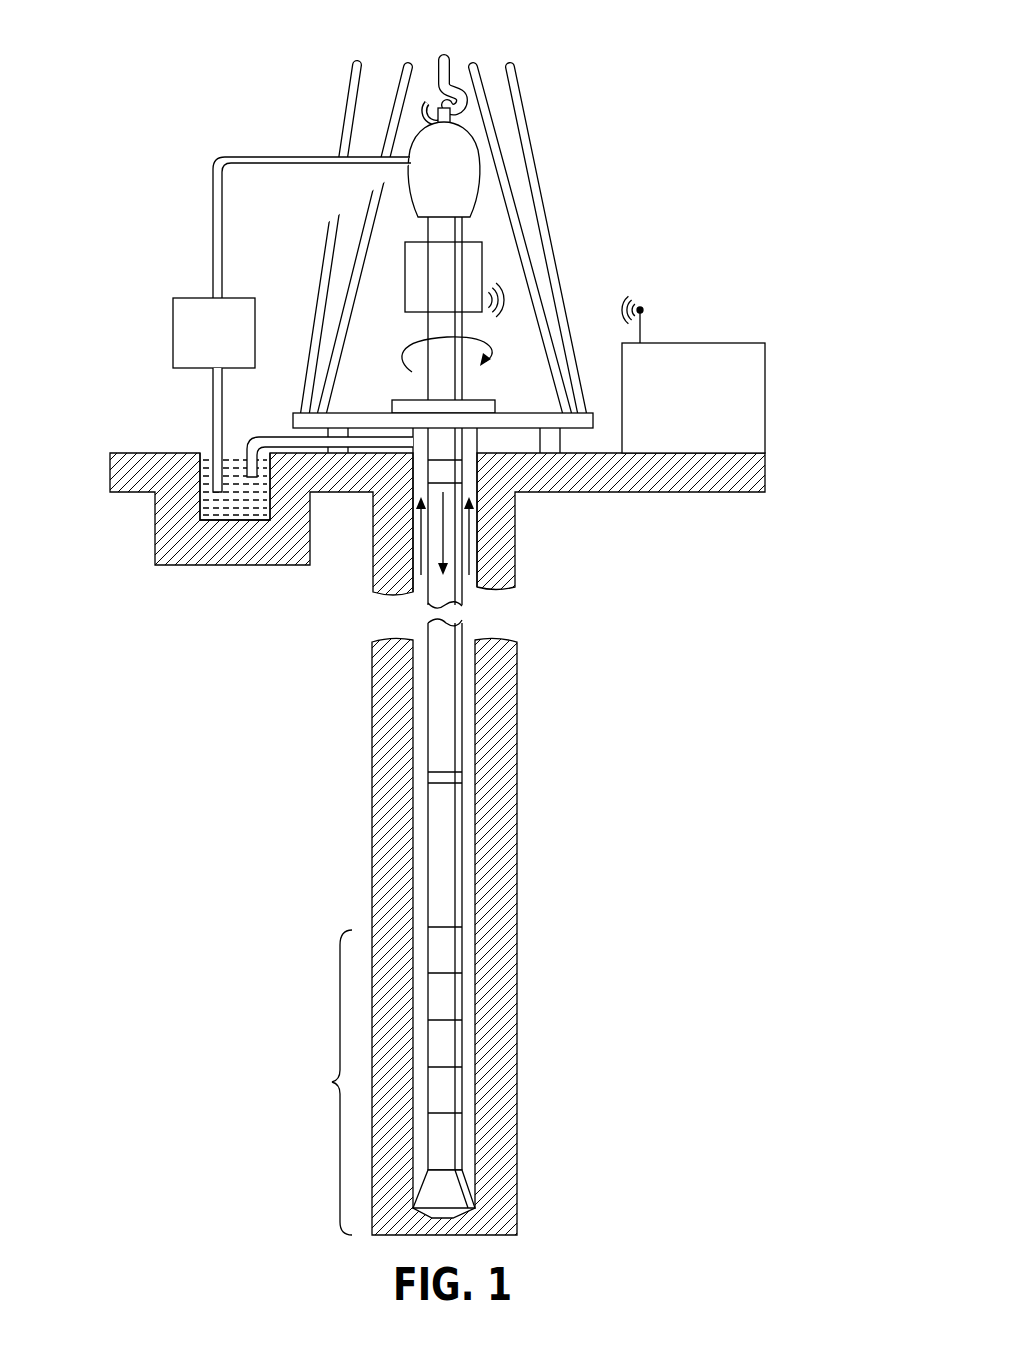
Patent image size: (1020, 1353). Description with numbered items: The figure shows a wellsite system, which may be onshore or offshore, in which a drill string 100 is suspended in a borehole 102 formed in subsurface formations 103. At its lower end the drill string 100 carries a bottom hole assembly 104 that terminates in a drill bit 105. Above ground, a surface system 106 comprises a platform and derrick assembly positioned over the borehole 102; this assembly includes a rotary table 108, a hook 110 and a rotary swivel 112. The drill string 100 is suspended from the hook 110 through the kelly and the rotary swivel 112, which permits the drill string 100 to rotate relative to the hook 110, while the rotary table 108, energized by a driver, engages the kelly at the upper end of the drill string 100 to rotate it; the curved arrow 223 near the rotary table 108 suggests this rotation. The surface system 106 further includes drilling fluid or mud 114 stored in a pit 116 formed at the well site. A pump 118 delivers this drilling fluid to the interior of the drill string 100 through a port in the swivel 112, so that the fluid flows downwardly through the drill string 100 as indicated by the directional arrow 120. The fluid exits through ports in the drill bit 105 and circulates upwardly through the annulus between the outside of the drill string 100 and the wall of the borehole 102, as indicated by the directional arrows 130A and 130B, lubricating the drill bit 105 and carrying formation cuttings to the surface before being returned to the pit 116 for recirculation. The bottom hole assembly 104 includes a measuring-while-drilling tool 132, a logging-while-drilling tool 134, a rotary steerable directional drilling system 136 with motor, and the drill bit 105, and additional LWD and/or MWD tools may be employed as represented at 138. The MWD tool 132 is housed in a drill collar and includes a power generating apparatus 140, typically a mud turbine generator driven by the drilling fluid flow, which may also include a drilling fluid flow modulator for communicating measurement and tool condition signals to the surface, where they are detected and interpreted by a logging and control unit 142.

The drill string 100 is at (428, 421).
The borehole 102 is at (469, 433).
The subsurface formations 103 is at (500, 697).
The bottom hole assembly 104 is at (322, 1082).
The drill bit 105 is at (447, 1187).
The surface system 106 is at (572, 148).
The rotary table 108 is at (470, 403).
The hook 110 is at (450, 68).
The rotary swivel 112 is at (424, 155).
The drilling fluid 114 is at (198, 442).
The pit 116 is at (233, 513).
The pump 118 is at (173, 312).
The directional arrow 120 is at (447, 543).
The directional arrow 130A is at (417, 537).
The directional arrow 130B is at (470, 525).
The measuring-while-drilling (MWD) tool 132 is at (447, 948).
The logging-while-drilling (LWD) tool 134 is at (447, 1091).
The rotary steerable directional drilling system 136 is at (447, 1136).
The additional LWD and/or MWD tool 138 is at (447, 1043).
The power generating apparatus 140 is at (447, 995).
The logging and control unit 142 is at (692, 343).
The rotation of drill string 223 is at (437, 381).